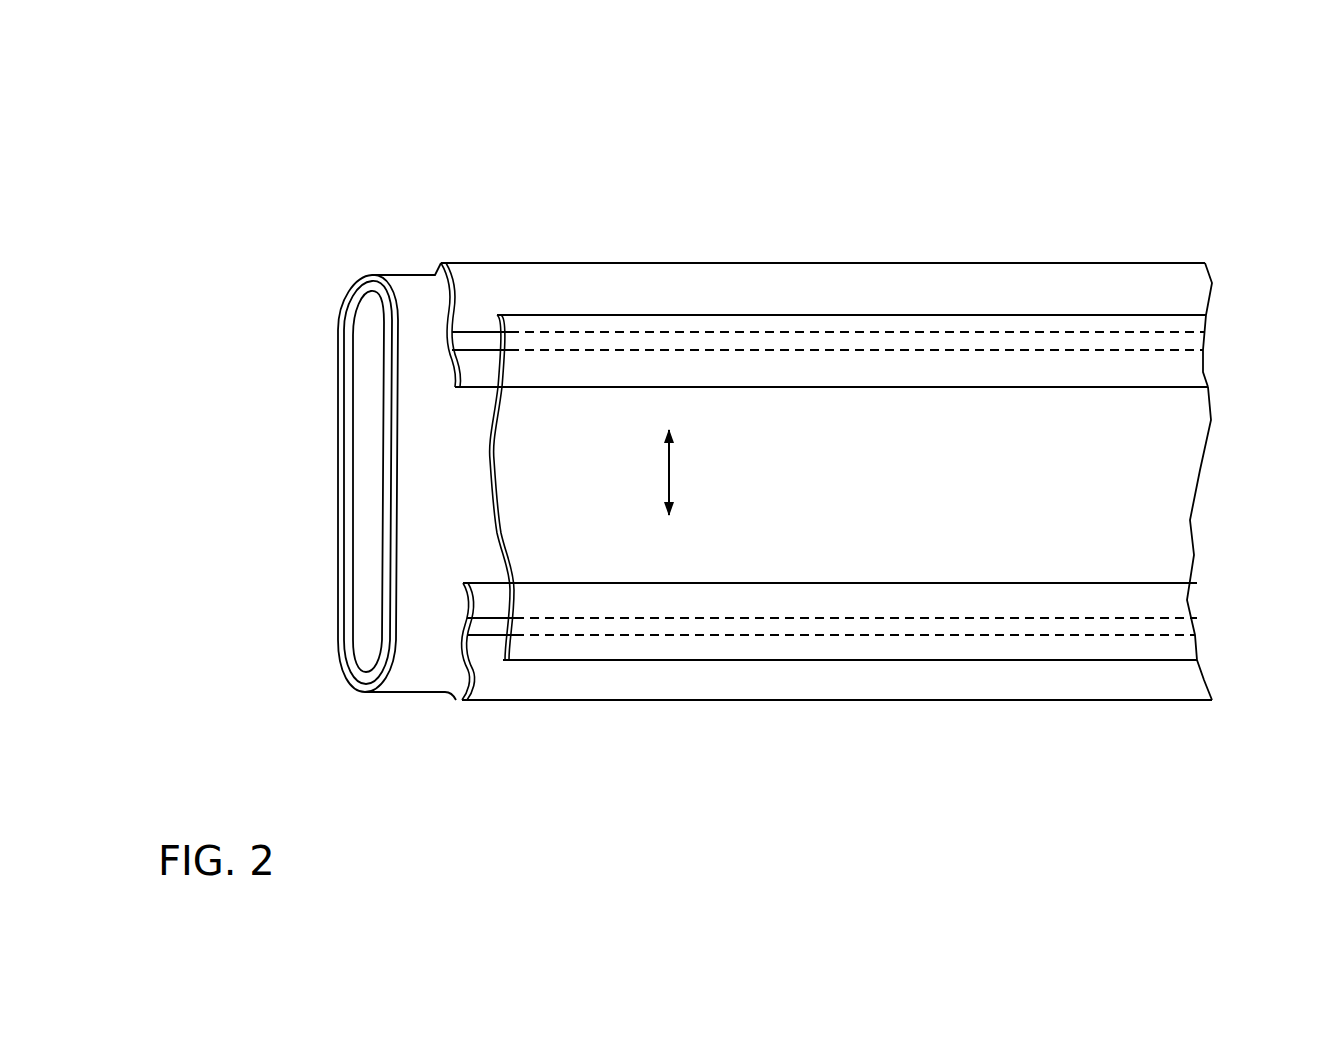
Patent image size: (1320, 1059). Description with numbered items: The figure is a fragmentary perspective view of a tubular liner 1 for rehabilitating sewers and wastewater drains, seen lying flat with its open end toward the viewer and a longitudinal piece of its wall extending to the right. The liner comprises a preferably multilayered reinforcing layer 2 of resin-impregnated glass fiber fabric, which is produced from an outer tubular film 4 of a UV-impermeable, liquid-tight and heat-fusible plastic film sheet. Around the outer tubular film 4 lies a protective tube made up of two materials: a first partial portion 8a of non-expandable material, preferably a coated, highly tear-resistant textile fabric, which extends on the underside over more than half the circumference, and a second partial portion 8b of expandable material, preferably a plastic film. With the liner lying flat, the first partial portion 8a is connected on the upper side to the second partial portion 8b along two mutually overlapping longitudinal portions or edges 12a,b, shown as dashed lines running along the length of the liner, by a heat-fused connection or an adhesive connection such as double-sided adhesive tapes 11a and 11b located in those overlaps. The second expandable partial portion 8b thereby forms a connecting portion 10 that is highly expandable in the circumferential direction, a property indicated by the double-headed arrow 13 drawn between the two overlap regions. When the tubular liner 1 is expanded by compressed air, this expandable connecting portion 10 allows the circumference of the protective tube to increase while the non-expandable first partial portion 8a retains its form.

The tubular liner 1 is at (407, 167).
The reinforcing layer 2 is at (348, 443).
The outer tubular film 4 is at (418, 518).
The first partial portion 8a is at (855, 282).
The second partial portion 8b is at (872, 464).
The connecting portion 10 is at (712, 342).
The double-sided adhesive tape 11a is at (1072, 340).
The double-sided adhesive tape 11b is at (1095, 623).
The longitudinal portions 12a,b is at (960, 328).
The double-headed arrow 13 is at (669, 473).